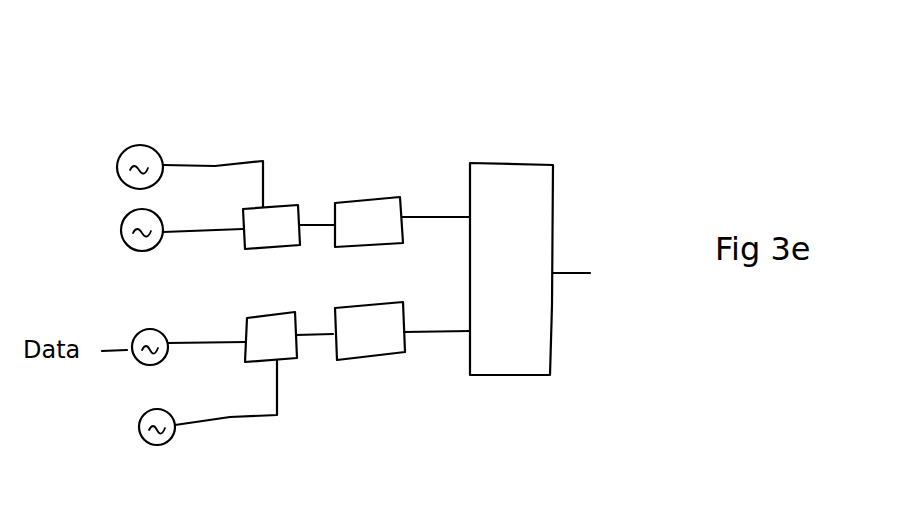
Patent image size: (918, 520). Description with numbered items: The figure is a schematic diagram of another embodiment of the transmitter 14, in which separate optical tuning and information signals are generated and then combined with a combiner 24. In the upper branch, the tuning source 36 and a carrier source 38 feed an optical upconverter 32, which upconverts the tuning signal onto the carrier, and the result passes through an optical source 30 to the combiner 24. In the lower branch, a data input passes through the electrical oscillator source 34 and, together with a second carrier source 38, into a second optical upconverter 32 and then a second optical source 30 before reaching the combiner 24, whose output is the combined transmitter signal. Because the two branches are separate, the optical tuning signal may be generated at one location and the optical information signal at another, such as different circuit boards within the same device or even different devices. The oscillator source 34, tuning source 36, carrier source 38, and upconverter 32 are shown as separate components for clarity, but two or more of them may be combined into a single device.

The transmitter 14 is at (513, 70).
The combiner 24 is at (530, 269).
The optical source 30 is at (402, 278).
The optical upconverter 32 is at (289, 283).
The electrical oscillator source 34 is at (170, 328).
The tuning source 36 is at (142, 139).
The carrier source 38 is at (126, 213).